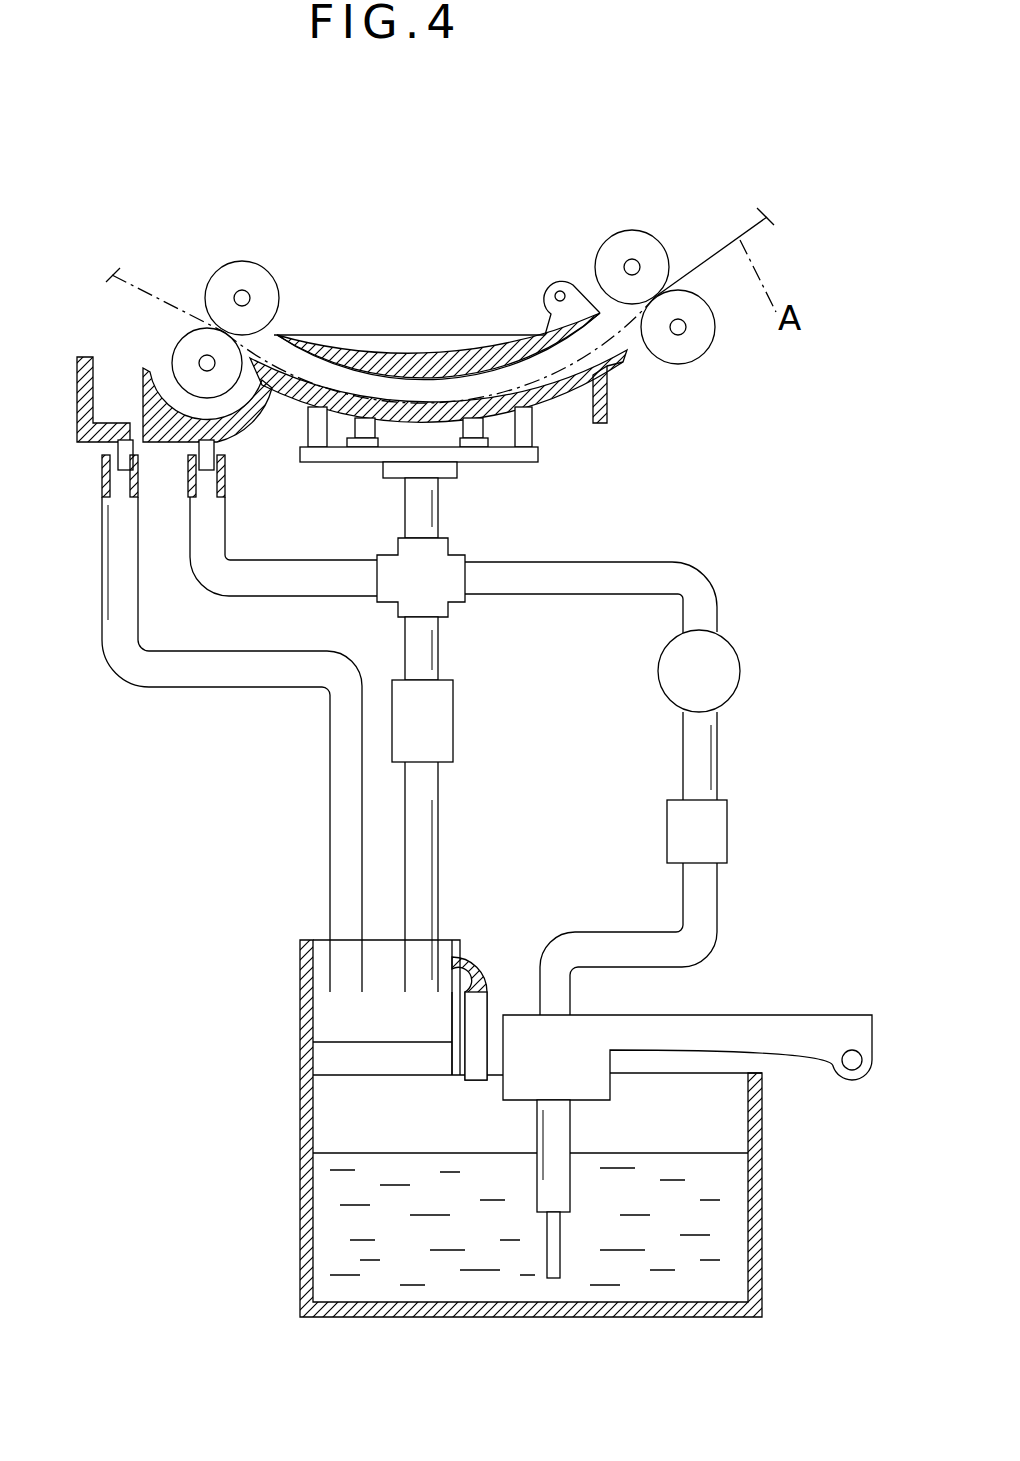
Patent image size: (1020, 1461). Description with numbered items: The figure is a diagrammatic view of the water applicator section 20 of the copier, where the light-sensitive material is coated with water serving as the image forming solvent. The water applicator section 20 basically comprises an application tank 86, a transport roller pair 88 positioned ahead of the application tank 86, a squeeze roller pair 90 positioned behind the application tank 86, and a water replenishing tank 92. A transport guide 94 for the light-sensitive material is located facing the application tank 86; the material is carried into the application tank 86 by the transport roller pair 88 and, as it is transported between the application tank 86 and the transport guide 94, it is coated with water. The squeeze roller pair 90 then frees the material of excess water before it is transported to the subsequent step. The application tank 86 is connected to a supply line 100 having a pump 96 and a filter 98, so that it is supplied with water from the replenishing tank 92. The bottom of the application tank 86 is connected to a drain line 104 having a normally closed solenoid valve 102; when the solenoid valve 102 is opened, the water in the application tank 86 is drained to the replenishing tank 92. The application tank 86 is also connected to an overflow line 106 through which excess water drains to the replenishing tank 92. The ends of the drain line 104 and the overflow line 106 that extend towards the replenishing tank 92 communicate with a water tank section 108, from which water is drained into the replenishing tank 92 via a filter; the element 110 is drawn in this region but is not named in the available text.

The water applicator section 20 is at (466, 240).
The application tank 86 is at (549, 395).
The transport roller pair 88 is at (690, 365).
The squeeze roller pair 90 is at (252, 262).
The water replenishing tank 92 is at (757, 1208).
The transport guide 94 is at (430, 335).
The pump 96 is at (741, 676).
The filter 98 is at (727, 833).
The supply line 100 is at (702, 567).
The solenoid valve 102 is at (453, 722).
The drain line 104 is at (440, 858).
The overflow line 106 is at (148, 677).
The water tank section 108 is at (328, 1018).
The partition 110 is at (328, 1066).